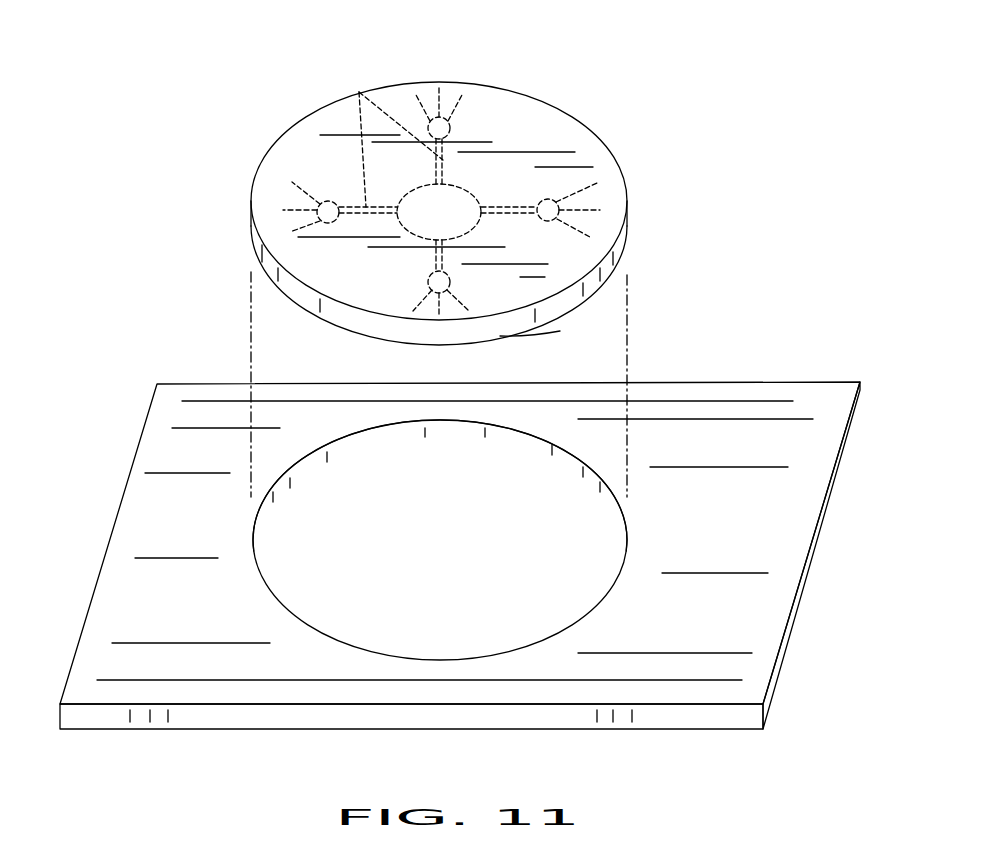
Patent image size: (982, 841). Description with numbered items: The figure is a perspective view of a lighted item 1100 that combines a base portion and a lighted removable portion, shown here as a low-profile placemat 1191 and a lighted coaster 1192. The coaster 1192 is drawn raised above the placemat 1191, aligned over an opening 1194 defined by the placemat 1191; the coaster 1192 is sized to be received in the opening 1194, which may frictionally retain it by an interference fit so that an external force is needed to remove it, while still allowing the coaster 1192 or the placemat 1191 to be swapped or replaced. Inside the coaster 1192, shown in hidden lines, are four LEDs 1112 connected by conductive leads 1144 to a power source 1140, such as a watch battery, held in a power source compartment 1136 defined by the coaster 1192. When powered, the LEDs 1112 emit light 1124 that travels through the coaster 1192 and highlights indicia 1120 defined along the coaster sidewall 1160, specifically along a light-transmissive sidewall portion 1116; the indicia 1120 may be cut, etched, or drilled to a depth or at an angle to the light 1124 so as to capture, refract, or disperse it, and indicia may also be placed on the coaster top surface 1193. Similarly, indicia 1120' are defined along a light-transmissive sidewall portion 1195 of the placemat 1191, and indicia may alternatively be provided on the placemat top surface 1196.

The lighted item 1100 is at (232, 110).
The lighted coaster 1192 is at (573, 115).
The coaster top surface 1193 is at (340, 134).
The coaster sidewall 1160 is at (260, 258).
The conductive leads 1144 is at (360, 92).
The power source 1140 is at (480, 200).
The light 1124 is at (460, 107).
The LEDs 1112 is at (323, 200).
The power source compartment 1136 is at (467, 228).
The indicia 1120 is at (392, 347).
The light-transmissive sidewall portion 1116 is at (520, 320).
The placemat 1191 is at (118, 513).
The placemat top surface 1196 is at (736, 518).
The opening 1194 is at (553, 587).
The light-transmissive sidewall portion of placemat 1195 is at (345, 717).
The indicia 1120' is at (492, 731).